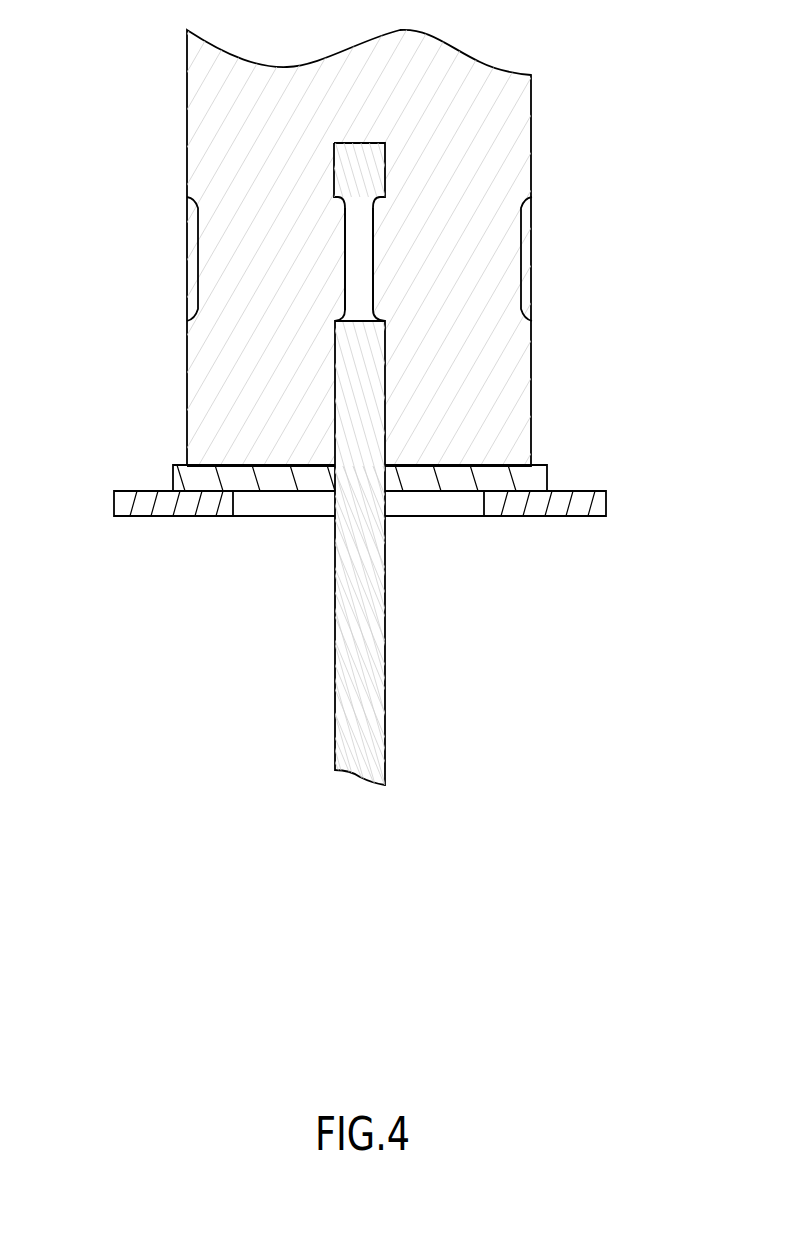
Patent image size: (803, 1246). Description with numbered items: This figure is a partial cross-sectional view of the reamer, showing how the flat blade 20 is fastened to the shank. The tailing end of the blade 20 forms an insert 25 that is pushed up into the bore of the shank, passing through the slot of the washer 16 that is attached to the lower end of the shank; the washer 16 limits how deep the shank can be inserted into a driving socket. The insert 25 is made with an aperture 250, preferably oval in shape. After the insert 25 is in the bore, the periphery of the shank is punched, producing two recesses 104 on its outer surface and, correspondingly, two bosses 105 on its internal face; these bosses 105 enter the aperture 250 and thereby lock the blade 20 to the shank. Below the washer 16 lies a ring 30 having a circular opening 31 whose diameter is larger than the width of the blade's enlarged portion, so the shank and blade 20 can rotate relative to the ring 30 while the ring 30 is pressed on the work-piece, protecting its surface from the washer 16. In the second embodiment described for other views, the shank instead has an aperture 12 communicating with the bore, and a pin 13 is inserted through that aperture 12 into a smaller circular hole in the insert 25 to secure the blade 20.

The aperture 12 is at (253, 193).
The pin 13 is at (233, 233).
The recesses 104 is at (195, 275).
The bosses 105 is at (522, 215).
The aperture 250 is at (383, 180).
The insert 25 is at (370, 443).
The blade 20 is at (372, 653).
The washer 16 is at (173, 480).
The ring 30 is at (163, 508).
The opening 31 is at (237, 500).